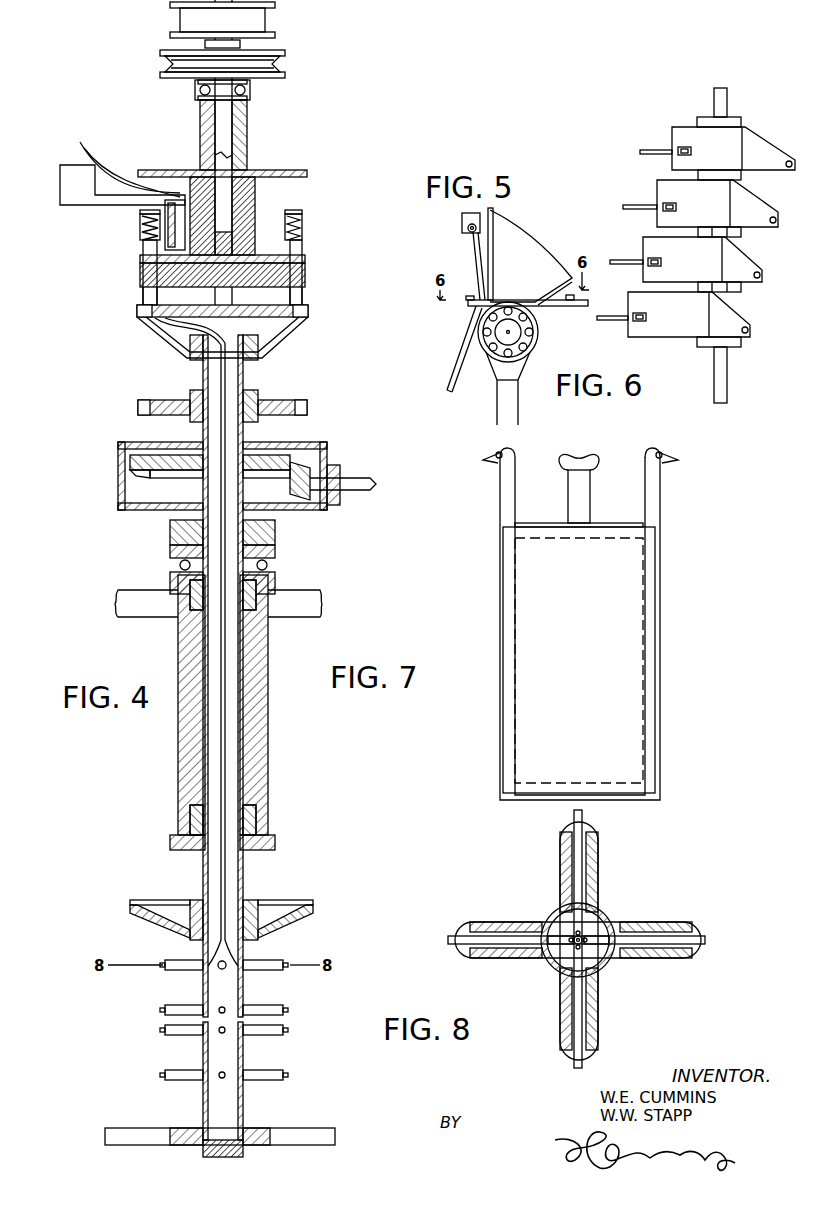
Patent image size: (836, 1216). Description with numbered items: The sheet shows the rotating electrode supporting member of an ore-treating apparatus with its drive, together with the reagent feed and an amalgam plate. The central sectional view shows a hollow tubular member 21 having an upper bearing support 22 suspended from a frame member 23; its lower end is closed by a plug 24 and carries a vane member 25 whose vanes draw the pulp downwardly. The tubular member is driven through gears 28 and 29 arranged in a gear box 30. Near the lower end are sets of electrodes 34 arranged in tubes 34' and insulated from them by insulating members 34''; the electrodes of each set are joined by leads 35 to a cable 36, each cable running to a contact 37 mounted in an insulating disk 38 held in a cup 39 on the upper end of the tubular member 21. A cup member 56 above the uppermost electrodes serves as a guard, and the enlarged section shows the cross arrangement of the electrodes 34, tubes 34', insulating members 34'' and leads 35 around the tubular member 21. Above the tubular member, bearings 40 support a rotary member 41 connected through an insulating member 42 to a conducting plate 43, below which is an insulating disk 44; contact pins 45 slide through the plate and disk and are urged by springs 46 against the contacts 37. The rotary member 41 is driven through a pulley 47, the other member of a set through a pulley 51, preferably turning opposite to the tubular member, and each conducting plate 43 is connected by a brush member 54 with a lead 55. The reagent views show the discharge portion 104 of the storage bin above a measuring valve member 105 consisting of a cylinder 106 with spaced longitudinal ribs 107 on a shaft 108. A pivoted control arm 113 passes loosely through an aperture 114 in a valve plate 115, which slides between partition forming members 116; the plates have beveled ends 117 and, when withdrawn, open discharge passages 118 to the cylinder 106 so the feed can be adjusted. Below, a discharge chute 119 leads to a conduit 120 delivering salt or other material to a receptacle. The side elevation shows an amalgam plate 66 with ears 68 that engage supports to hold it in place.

In FIG. 4, the pulley 47 is at (275, 20).
In FIG. 4, the pulley 51 is at (285, 62).
In FIG. 4, the bearings 40 is at (250, 97).
In FIG. 4, the rotary member 41 is at (307, 172).
In FIG. 4, the insulating member 42 is at (255, 200).
In FIG. 4, the conducting plate 43 is at (305, 258).
In FIG. 4, the insulating disk 44 is at (305, 275).
In FIG. 4, the contact pins 45 is at (302, 245).
In FIG. 4, the springs 46 is at (302, 218).
In FIG. 4, the brush member 54 is at (178, 246).
In FIG. 4, the lead 55 is at (90, 165).
In FIG. 4, the insulating disk 38 is at (308, 310).
In FIG. 4, the cup 39 is at (290, 322).
In FIG. 4, the contact 37 is at (162, 322).
In FIG. 4, the hollow tubular member 21 is at (243, 380).
In FIG. 8, the hollow tubular member 21 is at (605, 960).
In FIG. 4, the gear box 30 is at (320, 452).
In FIG. 4, the gear 28 is at (300, 470).
In FIG. 4, the gear 29 is at (333, 478).
In FIG. 4, the upper bearing support 22 is at (275, 552).
In FIG. 4, the frame member 23 is at (305, 590).
In FIG. 4, the cable 36 is at (225, 872).
In FIG. 4, the cup member 56 is at (313, 905).
In FIG. 4, the leads 35 is at (238, 968).
In FIG. 8, the leads 35 is at (590, 934).
In FIG. 4, the electrodes 34 is at (253, 1020).
In FIG. 8, the electrodes 34 is at (598, 939).
In FIG. 8, the tubes 34' is at (612, 920).
In FIG. 8, the insulating members 34'' is at (649, 920).
In FIG. 4, the vane member 25 is at (300, 1128).
In FIG. 4, the plug 24 is at (235, 1160).
In FIG. 5, the discharge portion 104 is at (505, 262).
In FIG. 5, the control arm 113 is at (478, 333).
In FIG. 6, the control arm 113 is at (625, 211).
In FIG. 5, the valve plate 115 is at (470, 307).
In FIG. 6, the valve plate 115 is at (655, 217).
In FIG. 5, the measuring valve member 105 is at (544, 336).
In FIG. 5, the shaft 108 is at (532, 323).
In FIG. 5, the ribs 107 is at (521, 340).
In FIG. 5, the discharge chute 119 is at (521, 374).
In FIG. 5, the cylinder 106 is at (488, 357).
In FIG. 5, the conduit 120 is at (497, 415).
In FIG. 6, the partition forming member 116 is at (700, 235).
In FIG. 6, the aperture 114 is at (648, 268).
In FIG. 6, the discharge passages 118 is at (735, 306).
In FIG. 6, the beveled ends 117 is at (735, 318).
In FIG. 7, the ears 68 is at (667, 455).
In FIG. 7, the amalgam plates 66 is at (660, 675).